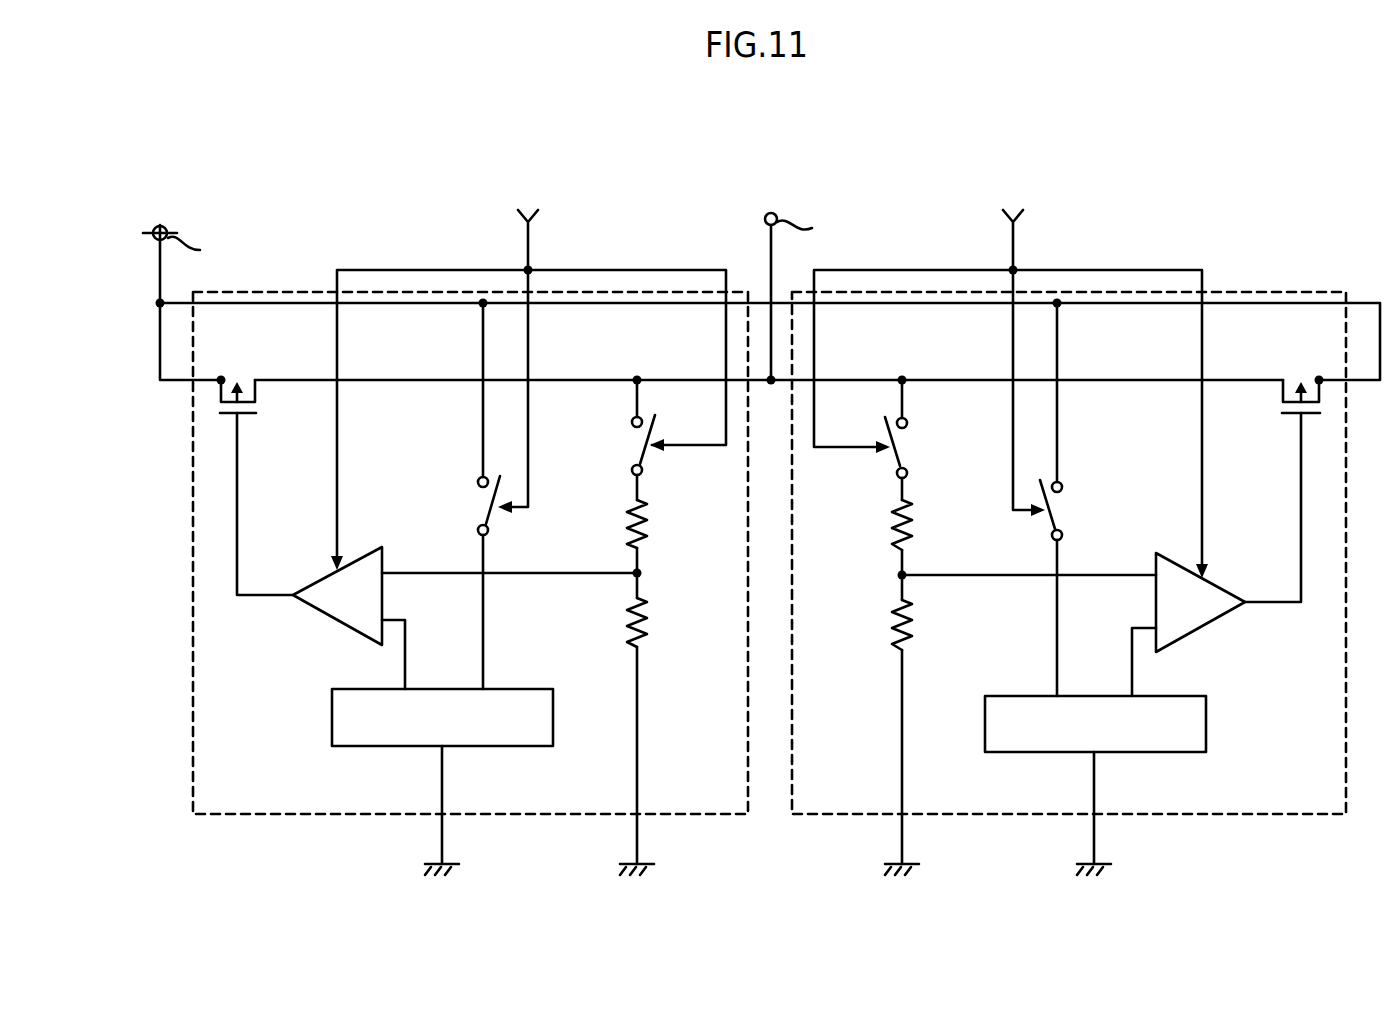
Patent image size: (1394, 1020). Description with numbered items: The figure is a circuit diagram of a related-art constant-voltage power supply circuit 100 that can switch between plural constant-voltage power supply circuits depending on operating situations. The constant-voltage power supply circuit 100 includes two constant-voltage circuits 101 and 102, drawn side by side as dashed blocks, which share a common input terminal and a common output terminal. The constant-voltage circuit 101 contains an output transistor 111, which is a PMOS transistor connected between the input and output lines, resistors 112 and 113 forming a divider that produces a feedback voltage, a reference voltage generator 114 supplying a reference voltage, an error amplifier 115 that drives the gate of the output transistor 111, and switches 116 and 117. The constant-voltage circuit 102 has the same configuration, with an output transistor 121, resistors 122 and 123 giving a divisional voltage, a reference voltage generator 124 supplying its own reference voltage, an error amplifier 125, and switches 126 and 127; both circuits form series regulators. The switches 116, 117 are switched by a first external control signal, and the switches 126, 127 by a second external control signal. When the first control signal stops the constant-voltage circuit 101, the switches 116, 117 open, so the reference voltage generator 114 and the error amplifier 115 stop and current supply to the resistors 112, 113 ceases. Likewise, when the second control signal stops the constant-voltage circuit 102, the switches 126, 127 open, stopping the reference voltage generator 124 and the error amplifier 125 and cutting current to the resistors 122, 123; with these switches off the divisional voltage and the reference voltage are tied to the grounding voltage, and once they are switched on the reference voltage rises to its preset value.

The constant-voltage power supply circuit 100 is at (945, 148).
The constant-voltage circuit 101 is at (300, 282).
The constant-voltage circuit 102 is at (1237, 288).
The output transistor 111 is at (240, 376).
The resistor 112 is at (663, 524).
The resistor 113 is at (663, 622).
The reference voltage generator 114 is at (331, 715).
The error amplifier 115 is at (312, 580).
The switch 116 is at (472, 492).
The switch 117 is at (628, 438).
The output transistor 121 is at (1290, 382).
The resistor 122 is at (877, 525).
The resistor 123 is at (877, 625).
The reference voltage generator 124 is at (1208, 718).
The error amplifier 125 is at (1222, 586).
The switch 126 is at (1066, 500).
The switch 127 is at (915, 440).